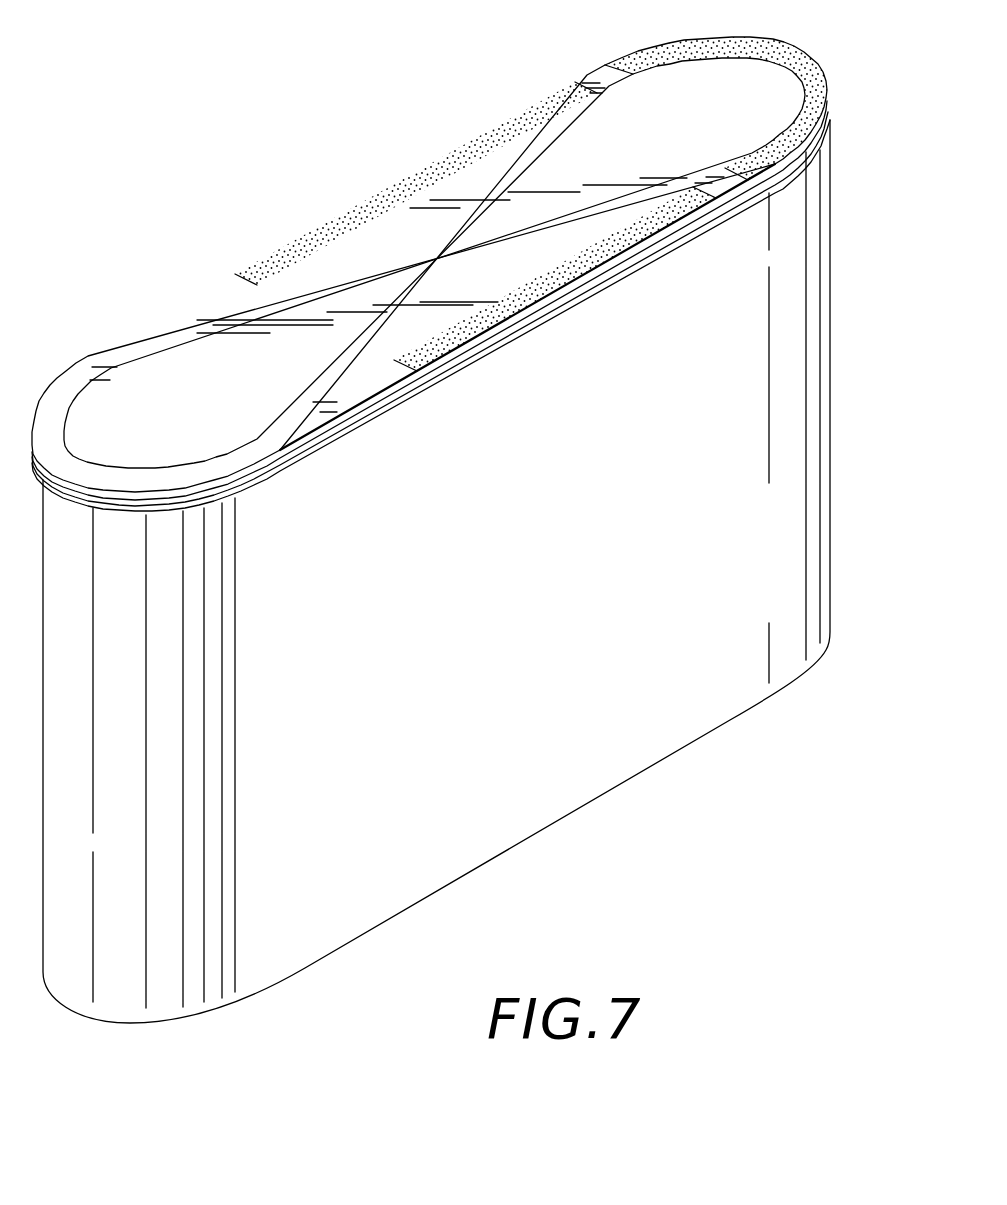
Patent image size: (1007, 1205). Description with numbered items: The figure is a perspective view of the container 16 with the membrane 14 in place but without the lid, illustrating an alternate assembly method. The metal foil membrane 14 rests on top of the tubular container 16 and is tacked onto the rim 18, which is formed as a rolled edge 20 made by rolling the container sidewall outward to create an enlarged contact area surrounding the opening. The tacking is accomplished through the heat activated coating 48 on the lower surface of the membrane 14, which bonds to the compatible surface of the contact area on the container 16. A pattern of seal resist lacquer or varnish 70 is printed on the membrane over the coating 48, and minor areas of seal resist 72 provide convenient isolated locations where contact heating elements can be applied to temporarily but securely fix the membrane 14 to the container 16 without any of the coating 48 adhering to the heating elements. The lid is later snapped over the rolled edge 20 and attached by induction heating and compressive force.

The membrane 14 is at (472, 273).
The tubular container 16 is at (472, 597).
The rim 18 is at (830, 80).
The rolled edge 20 is at (783, 182).
The heat activated coating 48 is at (350, 220).
The seal resist lacquer or varnish 70 is at (157, 333).
The minor areas of seal resist 72 is at (592, 90).